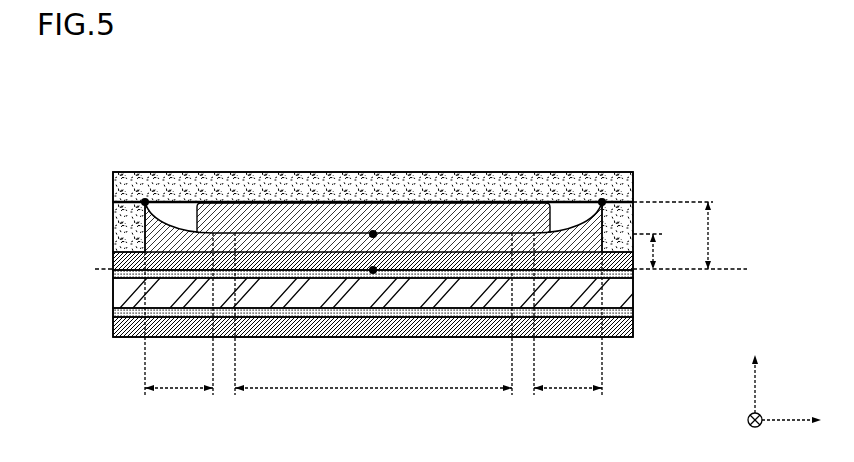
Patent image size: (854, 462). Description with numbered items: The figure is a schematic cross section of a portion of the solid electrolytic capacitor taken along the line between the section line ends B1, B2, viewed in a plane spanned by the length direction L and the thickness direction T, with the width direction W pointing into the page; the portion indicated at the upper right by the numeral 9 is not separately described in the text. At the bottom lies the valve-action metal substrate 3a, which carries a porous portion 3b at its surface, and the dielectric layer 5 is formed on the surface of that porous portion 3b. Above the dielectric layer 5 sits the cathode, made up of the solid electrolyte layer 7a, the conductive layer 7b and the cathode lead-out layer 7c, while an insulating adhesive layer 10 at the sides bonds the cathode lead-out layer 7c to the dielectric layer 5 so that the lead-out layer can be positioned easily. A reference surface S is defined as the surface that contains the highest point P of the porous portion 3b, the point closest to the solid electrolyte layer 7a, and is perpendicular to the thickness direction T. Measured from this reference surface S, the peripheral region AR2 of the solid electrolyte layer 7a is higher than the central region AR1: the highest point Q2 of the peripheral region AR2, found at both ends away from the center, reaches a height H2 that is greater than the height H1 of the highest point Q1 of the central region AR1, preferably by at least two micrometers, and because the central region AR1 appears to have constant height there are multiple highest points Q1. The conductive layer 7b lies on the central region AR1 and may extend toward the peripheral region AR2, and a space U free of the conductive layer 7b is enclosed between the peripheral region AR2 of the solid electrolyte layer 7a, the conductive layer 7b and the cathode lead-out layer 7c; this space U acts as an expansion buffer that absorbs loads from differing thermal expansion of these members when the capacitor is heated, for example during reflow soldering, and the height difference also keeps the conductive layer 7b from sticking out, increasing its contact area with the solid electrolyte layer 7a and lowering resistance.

The electronic component (display device) 9 is at (631, 137).
The cathode lead-out layer 7c is at (130, 185).
The conductive layer 7b is at (130, 204).
The solid electrolyte layer 7a is at (160, 217).
The insulating adhesive layer 10 is at (124, 240).
The dielectric layer 5 is at (118, 262).
The porous portion 3b is at (118, 274).
The valve-action metal substrate 3a is at (124, 293).
The highest point of the central region Q1 is at (373, 232).
The highest point of the peripheral region Q2 is at (145, 200).
The space U is at (178, 207).
The highest point of the porous portion P is at (373, 272).
The reference surface S is at (429, 270).
The height of the highest point of the central region H1 is at (663, 251).
The height of the highest point of the peripheral region H2 is at (690, 235).
The central region AR1 is at (373, 329).
The peripheral region AR2 is at (373, 329).
The section line end B1 is at (102, 381).
The section line end B2 is at (649, 381).
The thickness direction T is at (754, 370).
The length direction L is at (801, 422).
The width direction W is at (741, 420).